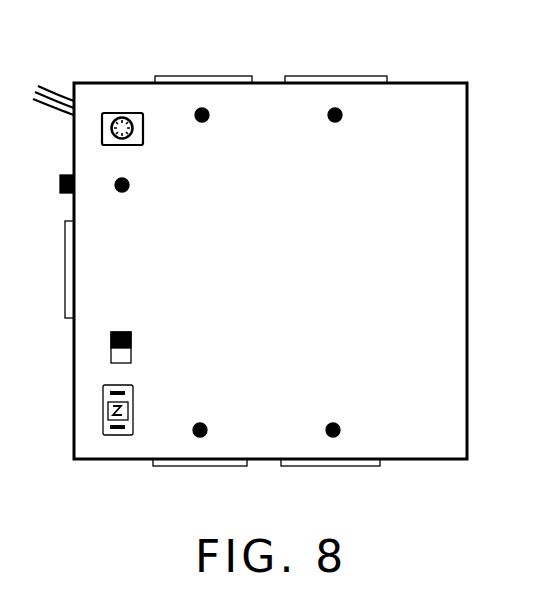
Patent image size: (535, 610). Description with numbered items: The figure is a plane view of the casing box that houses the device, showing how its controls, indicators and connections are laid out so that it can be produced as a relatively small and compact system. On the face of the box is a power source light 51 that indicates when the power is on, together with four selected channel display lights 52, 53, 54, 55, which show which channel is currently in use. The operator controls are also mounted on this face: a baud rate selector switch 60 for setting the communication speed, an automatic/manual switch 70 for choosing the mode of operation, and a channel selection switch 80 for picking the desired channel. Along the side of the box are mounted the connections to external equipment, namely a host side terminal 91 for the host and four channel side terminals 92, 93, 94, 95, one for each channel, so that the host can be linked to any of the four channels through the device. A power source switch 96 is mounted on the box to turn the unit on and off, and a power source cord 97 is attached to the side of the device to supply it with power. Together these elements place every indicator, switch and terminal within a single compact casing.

The power source light 51 is at (125, 191).
The selected channel display light 52 is at (202, 424).
The selected channel display light 53 is at (334, 424).
The selected channel display light 54 is at (339, 121).
The selected channel display light 55 is at (205, 121).
The baud rate selector switch 60 is at (103, 408).
The automatic/manual switch 70 is at (111, 353).
The channel selection switch 80 is at (120, 112).
The host side terminal 91 is at (65, 270).
The channel side terminal 92 is at (183, 466).
The channel side terminal 93 is at (342, 466).
The channel side terminal 94 is at (348, 76).
The channel side terminal 95 is at (211, 76).
The power source switch 96 is at (60, 187).
The power source cord 97 is at (50, 105).